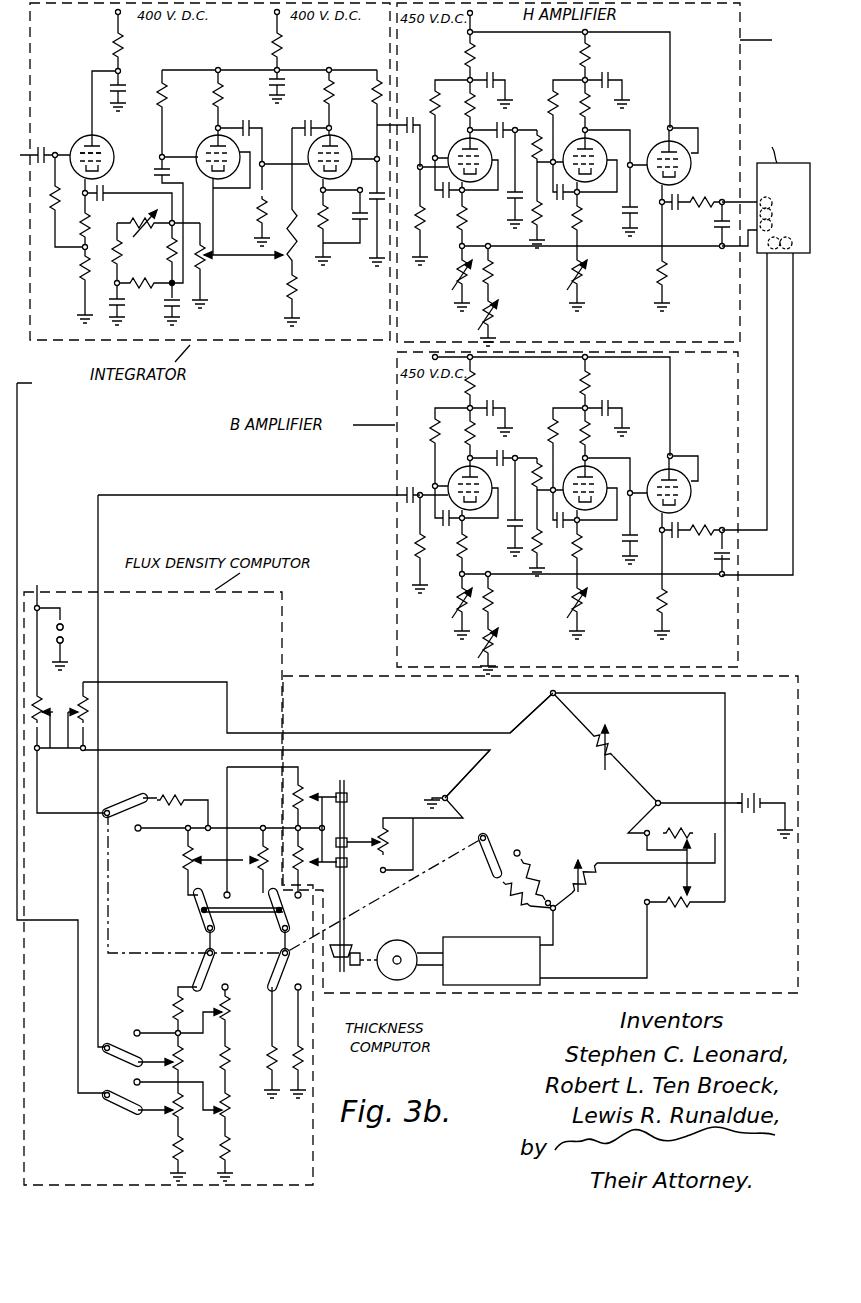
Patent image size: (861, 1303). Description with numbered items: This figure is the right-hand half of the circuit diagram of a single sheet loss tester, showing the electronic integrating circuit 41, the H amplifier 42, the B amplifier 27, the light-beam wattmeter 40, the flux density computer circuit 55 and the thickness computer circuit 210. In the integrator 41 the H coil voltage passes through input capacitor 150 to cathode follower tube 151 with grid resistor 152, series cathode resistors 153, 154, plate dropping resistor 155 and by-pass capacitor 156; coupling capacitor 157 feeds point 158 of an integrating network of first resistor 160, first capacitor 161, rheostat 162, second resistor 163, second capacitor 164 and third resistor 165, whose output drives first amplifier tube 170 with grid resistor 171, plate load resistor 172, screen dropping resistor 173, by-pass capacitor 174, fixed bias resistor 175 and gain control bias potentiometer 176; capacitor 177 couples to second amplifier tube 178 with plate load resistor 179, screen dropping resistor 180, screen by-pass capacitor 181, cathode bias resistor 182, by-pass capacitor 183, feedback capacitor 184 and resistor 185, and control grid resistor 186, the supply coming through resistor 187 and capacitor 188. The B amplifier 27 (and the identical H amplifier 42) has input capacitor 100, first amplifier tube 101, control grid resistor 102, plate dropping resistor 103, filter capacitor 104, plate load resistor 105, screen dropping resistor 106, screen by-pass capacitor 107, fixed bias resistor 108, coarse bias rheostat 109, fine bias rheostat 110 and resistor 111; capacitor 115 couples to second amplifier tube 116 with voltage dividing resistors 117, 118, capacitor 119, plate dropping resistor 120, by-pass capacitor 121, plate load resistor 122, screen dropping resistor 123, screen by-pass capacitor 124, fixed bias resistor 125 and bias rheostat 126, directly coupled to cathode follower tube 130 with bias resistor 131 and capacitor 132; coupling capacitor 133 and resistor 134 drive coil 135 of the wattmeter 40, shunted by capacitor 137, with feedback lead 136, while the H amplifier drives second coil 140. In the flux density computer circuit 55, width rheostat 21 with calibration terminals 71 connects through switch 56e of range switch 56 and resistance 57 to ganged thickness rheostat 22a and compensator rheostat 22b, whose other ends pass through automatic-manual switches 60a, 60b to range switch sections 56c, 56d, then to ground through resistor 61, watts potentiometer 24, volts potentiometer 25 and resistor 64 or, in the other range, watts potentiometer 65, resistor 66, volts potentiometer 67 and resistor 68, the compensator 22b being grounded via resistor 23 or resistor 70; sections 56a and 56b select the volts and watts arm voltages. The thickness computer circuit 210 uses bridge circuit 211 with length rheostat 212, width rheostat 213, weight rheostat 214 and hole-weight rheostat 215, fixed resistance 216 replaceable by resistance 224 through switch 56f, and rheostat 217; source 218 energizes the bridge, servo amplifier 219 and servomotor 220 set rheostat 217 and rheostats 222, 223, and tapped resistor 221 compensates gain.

The width adjustment rheostat 21 is at (48, 708).
The width rheostat 213 is at (78, 696).
The pair of terminals 71 is at (63, 630).
The flux density computer circuit 55 is at (303, 605).
The range switch 56 is at (150, 952).
The range switch section 56a is at (113, 1110).
The range switch section 56b is at (120, 1042).
The range switch section 56c is at (190, 969).
The range switch section 56d is at (265, 969).
The range switch section 56e is at (127, 798).
The range switch section 56f is at (500, 845).
The resistance 57 is at (175, 798).
The thickness adjustment rheostat 22a is at (181, 848).
The compensator rheostat 22b is at (254, 853).
The automatic-manual thickness adjustment switch 60a is at (190, 914).
The automatic-manual thickness adjustment switch 60b is at (273, 918).
The resistor 61 is at (172, 1000).
The watts adjustment potentiometer 65 is at (232, 1005).
The watts adjustment potentiometer 24 is at (184, 1065).
The volts adjustment potentiometer 25 is at (174, 1116).
The resistor 64 is at (172, 1155).
The resistor 66 is at (230, 1075).
The volts adjustment potentiometer 67 is at (230, 1115).
The resistor 68 is at (230, 1155).
The resistor 23 is at (267, 1057).
The resistor 70 is at (294, 1047).
The thickness computer circuit 210 is at (335, 675).
The bridge circuit 211 is at (565, 785).
The rheostat 212 is at (617, 745).
The rheostat 214 is at (686, 829).
The rheostat 215 is at (596, 883).
The fixed resistance 216 is at (511, 905).
The rheostat 217 is at (378, 835).
The source of voltage 218 is at (746, 792).
The servo amplifier 219 is at (490, 937).
The servomotor 220 is at (400, 943).
The resistor with non-linear taps 221 is at (682, 911).
The rheostat 222 is at (308, 791).
The rheostat 223 is at (305, 870).
The resistance 224 is at (538, 867).
The B amplifier 27 is at (393, 372).
The electronic integrating circuit 41 is at (297, 342).
The H amplifier 42 is at (793, 51).
The light-beam wattmeter 40 is at (778, 182).
The second coil 140 is at (773, 214).
The coil 135 is at (718, 228).
The lead 136 is at (635, 246).
The capacitor 137 is at (716, 562).
The input capacitor 100 is at (410, 117).
The first amplifier tube 101 is at (457, 141).
The control grid resistor 102 is at (432, 388).
The plate dropping resistor 103 is at (465, 53).
The filter capacitor 104 is at (495, 78).
The plate load resistor 105 is at (466, 101).
The screen dropping resistor 106 is at (431, 92).
The screen by-pass capacitor 107 is at (439, 365).
The fixed bias resistor 108 is at (466, 218).
The coarse bias adjustment rheostat 109 is at (456, 283).
The fine bias adjustment rheostat 110 is at (500, 320).
The resistor 111 is at (496, 268).
The input capacitor 115 is at (497, 126).
The second amplifier tube 116 is at (574, 140).
The input voltage dividing resistor 117 is at (536, 458).
The input voltage dividing resistor 118 is at (541, 222).
The capacitor 119 is at (511, 201).
The plate dropping resistor 120 is at (580, 55).
The by-pass capacitor 121 is at (622, 77).
The plate load resistor 122 is at (590, 114).
The screen dropping resistor 123 is at (546, 103).
The screen by-pass capacitor 124 is at (561, 366).
The fixed bias resistor 125 is at (583, 230).
The bias rheostat 126 is at (586, 277).
The cathode follower tube 130 is at (660, 141).
The bias resistor 131 is at (666, 272).
The capacitor 132 is at (626, 218).
The coupling capacitor 133 is at (675, 212).
The resistor 134 is at (700, 200).
The input capacitor 150 is at (44, 145).
The cathode follower tube 151 is at (112, 141).
The grid resistor 152 is at (53, 208).
The cathode resistor 153 is at (83, 222).
The cathode resistor 154 is at (79, 277).
The plate dropping resistor 155 is at (103, 44).
The by-pass capacitor 156 is at (123, 85).
The coupling capacitor 157 is at (104, 190).
The point 158 is at (158, 160).
The first resistor 160 is at (168, 248).
The first capacitor 161 is at (183, 308).
The rheostat 162 is at (135, 220).
The second resistor 163 is at (120, 260).
The second capacitor 164 is at (125, 307).
The third resistor 165 is at (136, 285).
The first amplifier tube 170 is at (208, 155).
The resistor 171 is at (207, 258).
The plate load resistor 172 is at (213, 103).
The screen dropping resistor 173 is at (170, 98).
The by-pass capacitor 174 is at (115, 144).
The fixed bias resistor 175 is at (300, 297).
The gain control bias potentiometer 176 is at (297, 257).
The capacitor 177 is at (245, 120).
The second amplifier tube 178 is at (351, 140).
The plate load resistor 179 is at (324, 89).
The screen dropping resistor 180 is at (374, 90).
The screen by-pass capacitor 181 is at (365, 204).
The cathode bias resistor 182 is at (320, 212).
The by-pass capacitor 183 is at (357, 221).
The capacitor 184 is at (307, 119).
The resistor 185 is at (286, 208).
The control grid resistor 186 is at (257, 213).
The resistor 187 is at (268, 38).
The capacitor 188 is at (264, 83).